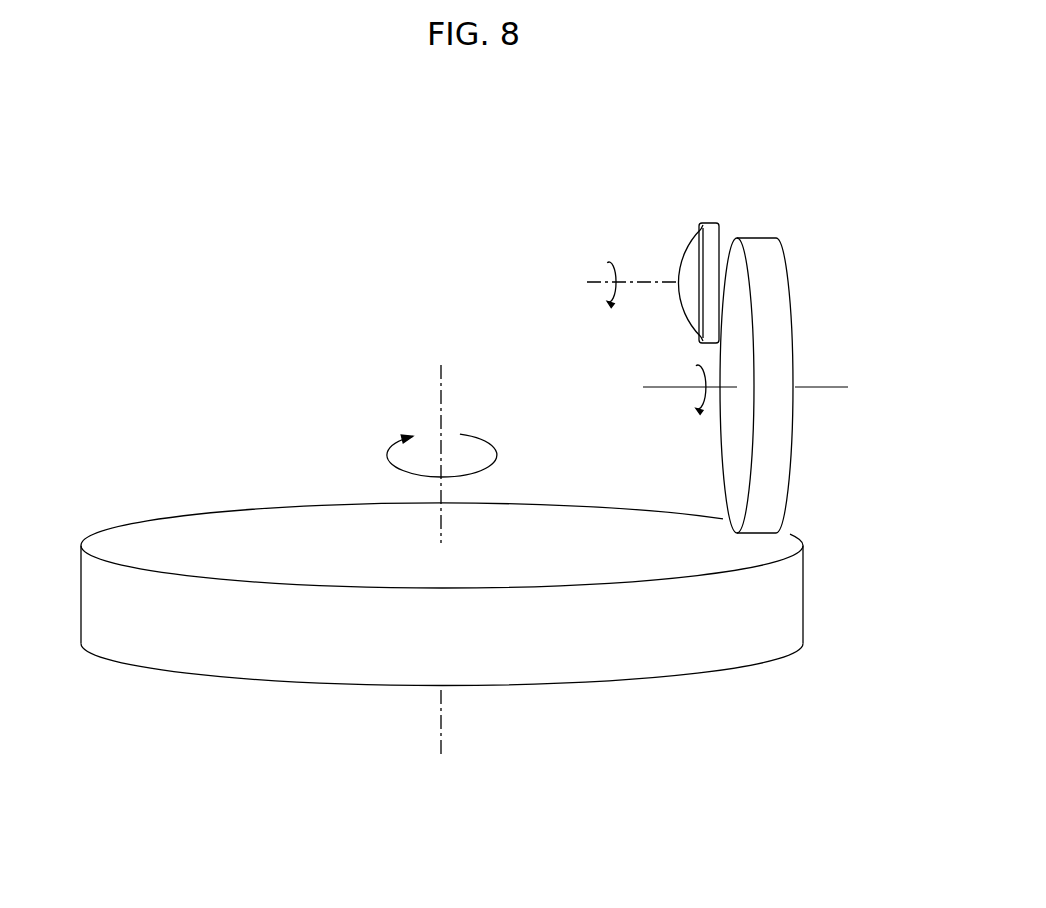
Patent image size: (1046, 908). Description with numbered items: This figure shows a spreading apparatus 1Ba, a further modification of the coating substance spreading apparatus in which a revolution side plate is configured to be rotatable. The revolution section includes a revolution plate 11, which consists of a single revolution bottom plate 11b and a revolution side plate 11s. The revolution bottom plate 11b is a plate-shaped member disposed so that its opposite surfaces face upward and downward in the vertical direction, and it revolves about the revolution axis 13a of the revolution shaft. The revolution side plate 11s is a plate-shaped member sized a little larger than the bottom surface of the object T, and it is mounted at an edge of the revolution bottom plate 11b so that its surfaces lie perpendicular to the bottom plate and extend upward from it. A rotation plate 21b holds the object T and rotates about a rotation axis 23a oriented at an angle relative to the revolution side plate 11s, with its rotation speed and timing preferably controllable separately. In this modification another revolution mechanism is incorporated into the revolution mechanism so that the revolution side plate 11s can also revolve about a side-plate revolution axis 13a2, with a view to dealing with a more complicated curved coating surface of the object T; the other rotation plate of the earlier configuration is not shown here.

The spreading apparatus 1Ba is at (258, 278).
The revolution plate 11 is at (882, 455).
The revolution side plate 11s is at (780, 470).
The revolution bottom plate 11b is at (790, 583).
The revolution axis 13a is at (437, 714).
The side-plate revolution axis 13a2 is at (668, 392).
The rotation axis 23a is at (626, 278).
The rotation plate 21b is at (713, 228).
The object T is at (687, 300).